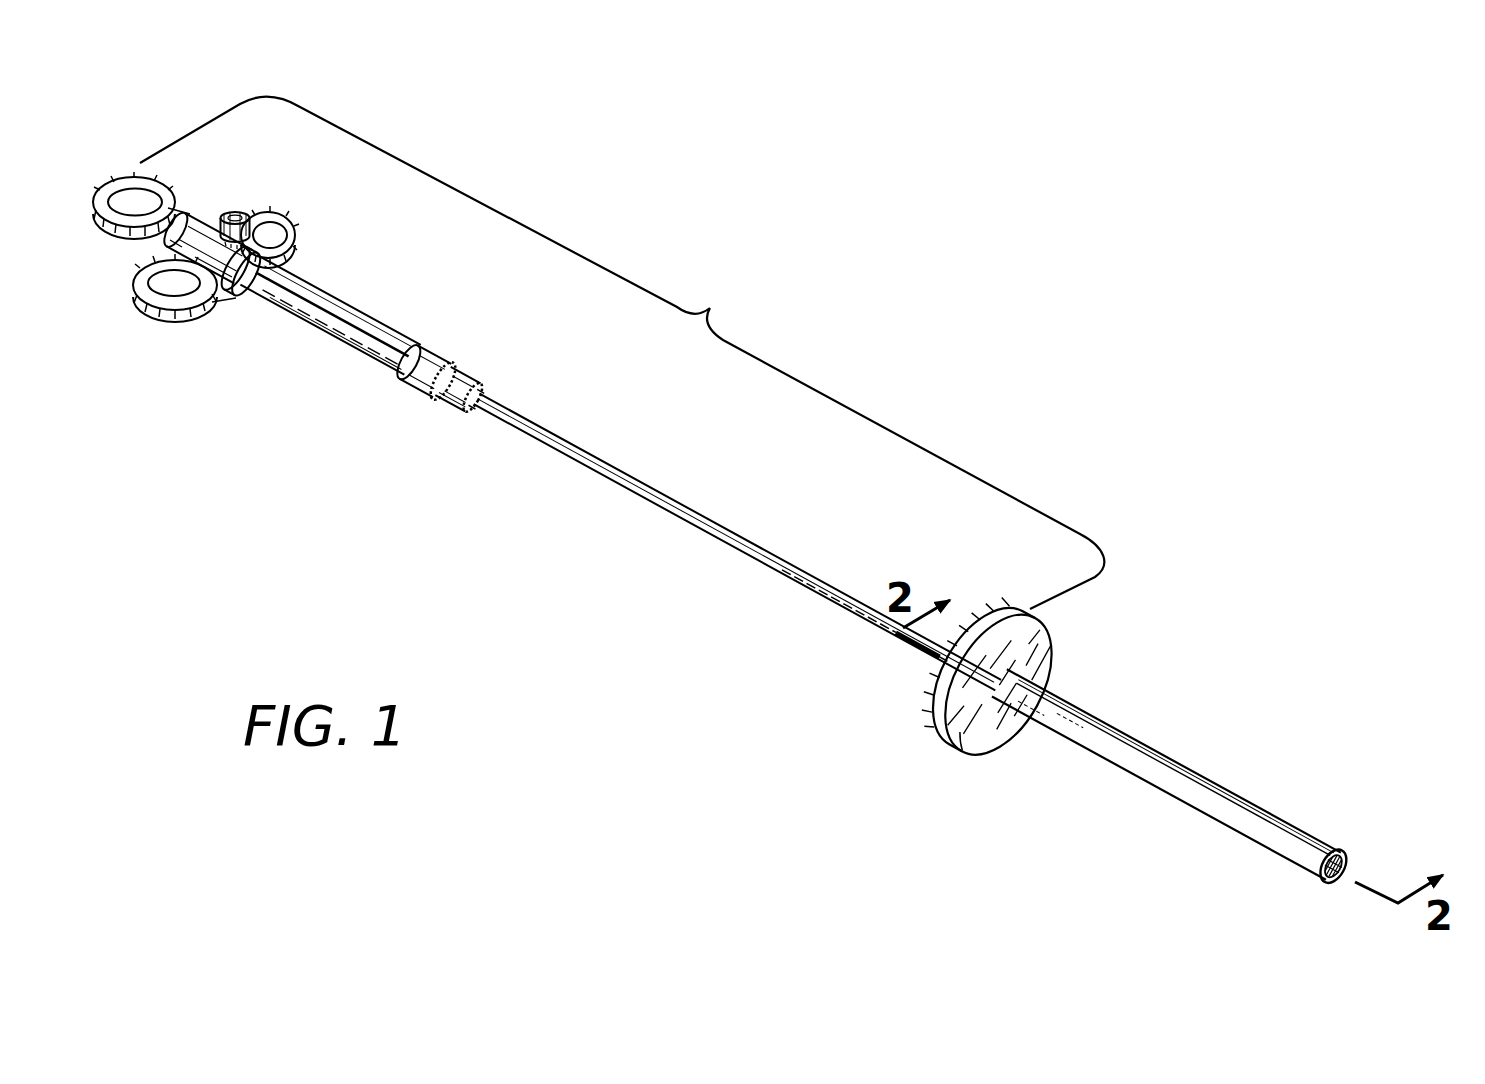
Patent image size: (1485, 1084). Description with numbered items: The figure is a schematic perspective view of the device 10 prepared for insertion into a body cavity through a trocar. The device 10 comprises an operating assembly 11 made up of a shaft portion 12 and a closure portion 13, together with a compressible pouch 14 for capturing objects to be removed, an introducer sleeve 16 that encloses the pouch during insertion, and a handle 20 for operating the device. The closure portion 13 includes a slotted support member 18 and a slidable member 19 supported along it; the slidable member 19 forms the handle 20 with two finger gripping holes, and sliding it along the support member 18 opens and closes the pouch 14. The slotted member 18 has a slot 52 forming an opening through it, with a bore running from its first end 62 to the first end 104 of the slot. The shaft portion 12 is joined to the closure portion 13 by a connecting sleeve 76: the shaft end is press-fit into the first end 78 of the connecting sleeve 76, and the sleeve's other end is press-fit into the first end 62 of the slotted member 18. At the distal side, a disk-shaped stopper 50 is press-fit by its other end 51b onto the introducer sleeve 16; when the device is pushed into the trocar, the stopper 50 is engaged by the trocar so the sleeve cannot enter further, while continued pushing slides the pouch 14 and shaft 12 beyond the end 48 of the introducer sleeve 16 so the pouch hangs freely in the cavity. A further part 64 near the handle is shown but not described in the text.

The device 10 is at (910, 405).
The operating assembly 11 is at (710, 308).
The shaft portion 12 is at (733, 535).
The closure portion 13 is at (390, 270).
The compressible pouch 14 is at (1333, 886).
The introducer sleeve 16 is at (1157, 777).
The slotted support member 18 is at (377, 358).
The slidable member 19 is at (203, 237).
The handle 20 is at (289, 207).
The end of introducer sleeve 48 is at (1345, 857).
The stopper 50 is at (1064, 650).
The flange rim 51b is at (962, 733).
The slot 52 is at (308, 295).
The first end of slotted member 62 is at (448, 367).
The thumb ring 64 is at (113, 178).
The connecting sleeve 76 is at (445, 400).
The first end of connecting sleeve 78 is at (482, 390).
The first end of slot 104 is at (395, 336).